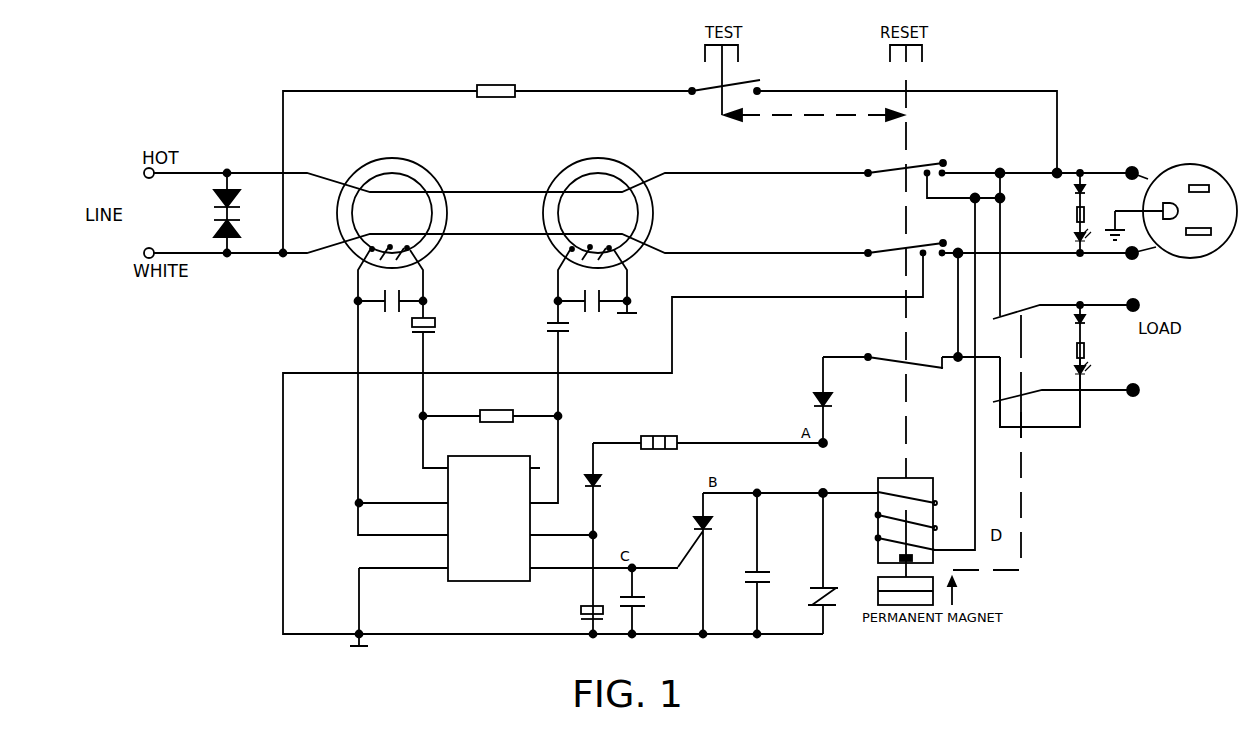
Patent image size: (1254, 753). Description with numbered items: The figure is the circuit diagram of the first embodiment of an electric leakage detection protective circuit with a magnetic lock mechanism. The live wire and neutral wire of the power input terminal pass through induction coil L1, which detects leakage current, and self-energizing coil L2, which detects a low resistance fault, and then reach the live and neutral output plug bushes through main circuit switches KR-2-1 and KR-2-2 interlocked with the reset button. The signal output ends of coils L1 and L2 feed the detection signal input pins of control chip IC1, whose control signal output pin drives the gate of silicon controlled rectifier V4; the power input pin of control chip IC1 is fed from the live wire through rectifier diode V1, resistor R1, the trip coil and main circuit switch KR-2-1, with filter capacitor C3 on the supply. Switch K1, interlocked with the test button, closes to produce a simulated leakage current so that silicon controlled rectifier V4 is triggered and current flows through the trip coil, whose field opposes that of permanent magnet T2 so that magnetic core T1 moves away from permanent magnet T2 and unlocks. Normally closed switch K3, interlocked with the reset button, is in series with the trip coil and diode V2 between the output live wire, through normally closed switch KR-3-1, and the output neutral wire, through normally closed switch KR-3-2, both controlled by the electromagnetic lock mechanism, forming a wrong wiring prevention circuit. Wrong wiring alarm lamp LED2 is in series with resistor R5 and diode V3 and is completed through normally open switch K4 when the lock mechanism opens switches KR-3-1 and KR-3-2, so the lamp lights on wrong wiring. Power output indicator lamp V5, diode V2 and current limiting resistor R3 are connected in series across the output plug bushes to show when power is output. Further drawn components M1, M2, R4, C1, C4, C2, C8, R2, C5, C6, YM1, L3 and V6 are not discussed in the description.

The diode M1 is at (243, 193).
The diode M2 is at (243, 233).
The resistor R4 is at (496, 80).
The switch K1 is at (741, 81).
The induction coil L1 is at (392, 220).
The self-energizing coil L2 is at (598, 220).
The capacitor C1 is at (391, 293).
The capacitor C4 is at (437, 358).
The capacitor C2 is at (596, 293).
The capacitor C8 is at (570, 358).
The resistor R2 is at (491, 407).
The control chip IC1 is at (563, 518).
The rectifier diode V1 is at (600, 538).
The filter capacitor C3 is at (578, 622).
The resistor R1 is at (708, 432).
The diode V2 is at (935, 308).
The normally closed switch K3 is at (911, 354).
The main circuit switch KR-2-1 is at (968, 178).
The main circuit switch KR-2-2 is at (968, 245).
The current limiting resistor R3 is at (1067, 216).
The power output indicator lamp V5 is at (1071, 239).
The normally closed switch KR-3-1 is at (1066, 308).
The diode V3 is at (1068, 324).
The resistor R5 is at (1068, 351).
The wrong wiring alarm lamp LED2 is at (1099, 365).
The light emitting diode V6 is at (1096, 392).
The normally closed switch KR-3-2 is at (1066, 404).
The normally open switch K4 is at (1029, 392).
The silicon controlled rectifier V4 is at (686, 565).
The capacitor C5 is at (644, 603).
The capacitor C6 is at (743, 565).
The metal oxide varistor YM1 is at (811, 563).
The solenoid coil L3 is at (891, 520).
The magnetic core T1 is at (898, 557).
The permanent magnet T2 is at (905, 591).